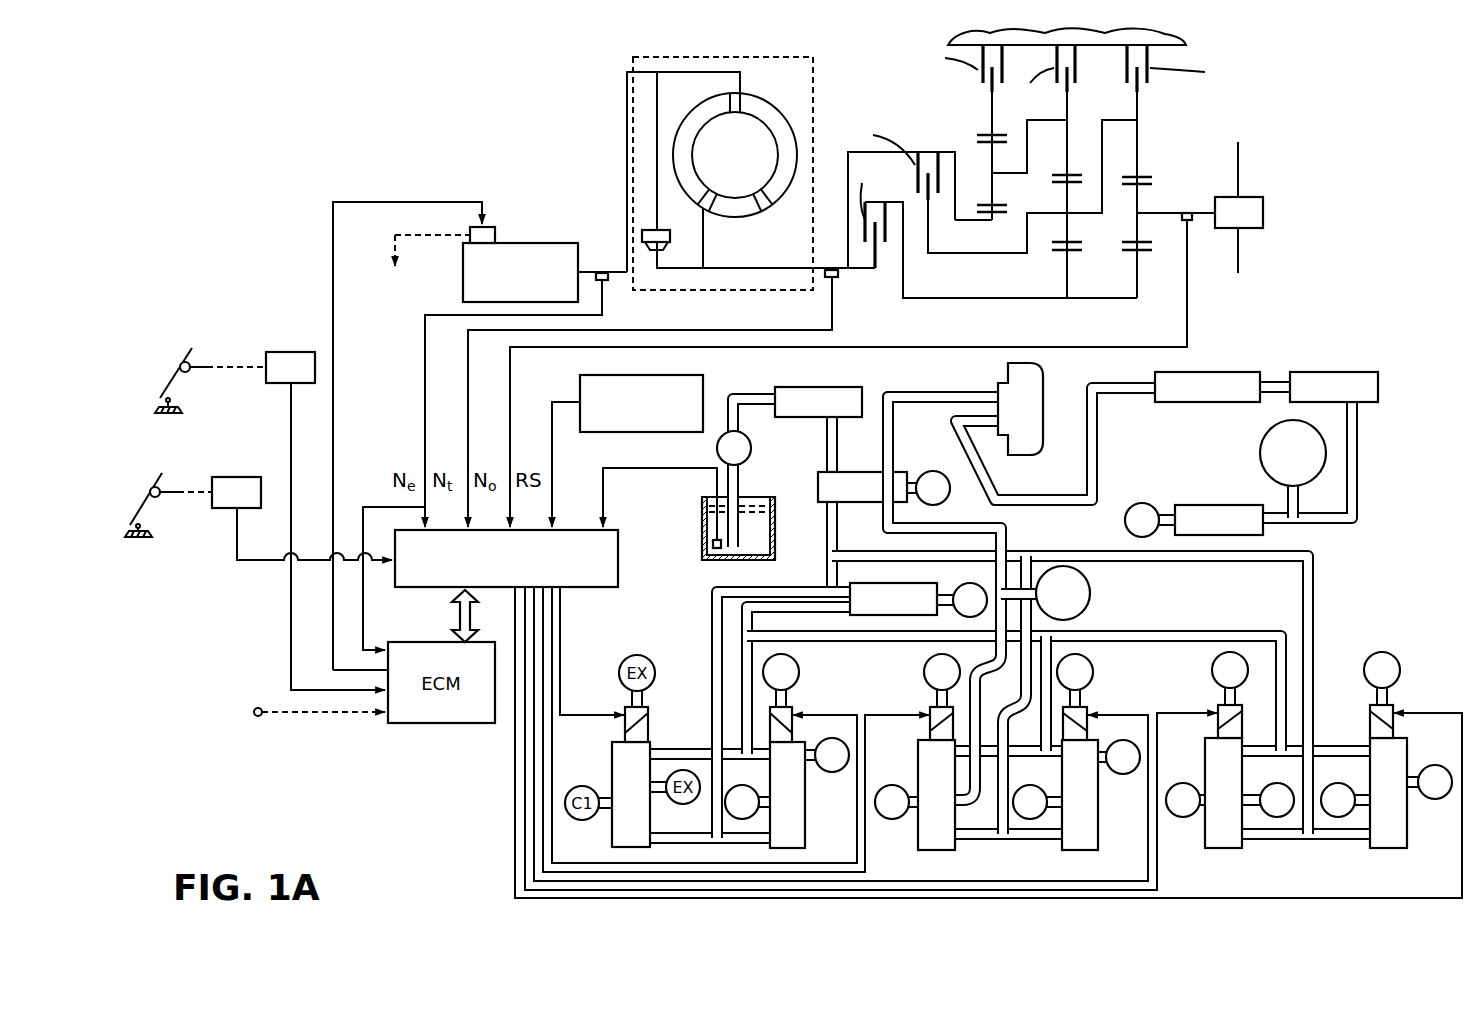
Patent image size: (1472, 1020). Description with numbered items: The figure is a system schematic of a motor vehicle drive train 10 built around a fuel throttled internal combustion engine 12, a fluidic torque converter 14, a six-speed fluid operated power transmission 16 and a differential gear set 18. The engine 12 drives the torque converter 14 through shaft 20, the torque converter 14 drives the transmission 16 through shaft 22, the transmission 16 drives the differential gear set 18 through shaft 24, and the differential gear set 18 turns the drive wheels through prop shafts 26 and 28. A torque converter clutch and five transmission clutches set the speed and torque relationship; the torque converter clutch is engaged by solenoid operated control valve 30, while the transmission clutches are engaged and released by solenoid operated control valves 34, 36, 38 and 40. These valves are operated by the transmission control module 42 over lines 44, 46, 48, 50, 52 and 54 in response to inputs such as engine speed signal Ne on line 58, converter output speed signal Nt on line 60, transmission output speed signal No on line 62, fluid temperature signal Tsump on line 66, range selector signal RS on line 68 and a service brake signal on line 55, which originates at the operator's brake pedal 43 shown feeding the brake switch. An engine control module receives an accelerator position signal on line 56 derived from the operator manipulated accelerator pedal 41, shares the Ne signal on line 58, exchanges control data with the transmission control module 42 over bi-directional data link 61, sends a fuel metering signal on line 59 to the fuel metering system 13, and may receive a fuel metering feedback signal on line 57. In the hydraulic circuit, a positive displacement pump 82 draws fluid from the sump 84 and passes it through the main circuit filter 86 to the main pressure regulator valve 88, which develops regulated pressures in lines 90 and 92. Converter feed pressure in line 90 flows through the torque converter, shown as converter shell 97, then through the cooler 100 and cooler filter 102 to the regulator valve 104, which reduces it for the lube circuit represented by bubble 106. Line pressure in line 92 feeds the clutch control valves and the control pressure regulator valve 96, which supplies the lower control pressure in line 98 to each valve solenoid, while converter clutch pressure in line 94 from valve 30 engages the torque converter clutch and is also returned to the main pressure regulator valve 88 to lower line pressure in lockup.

The motor vehicle drive train 10 is at (469, 162).
The fuel throttled internal combustion engine 12 is at (528, 245).
The fuel metering system 13 is at (492, 235).
The fluidic torque converter 14 is at (667, 52).
The six-speed fluid operated power transmission 16 is at (913, 128).
The differential gear set 18 is at (1263, 215).
The shaft 20 is at (627, 256).
The shaft 22 is at (843, 273).
The shaft 24 is at (1172, 210).
The prop shaft 26 is at (1240, 162).
The prop shaft 28 is at (1240, 247).
The solenoid operated control valve 30 is at (937, 843).
The solenoid operated control valve 34 is at (800, 797).
The solenoid operated control valve 36 is at (1077, 842).
The solenoid operated control valve 38 is at (1232, 846).
The solenoid operated control valve 40 is at (1380, 843).
The accelerator pedal 41 is at (178, 368).
The transmission control module 42 is at (572, 578).
The brake pedal 43 is at (150, 492).
The line 44 is at (540, 820).
The line 46 is at (585, 713).
The line 48 is at (550, 843).
The line 50 is at (533, 788).
The line 52 is at (523, 760).
The line 54 is at (515, 737).
The line 55 is at (237, 528).
The line 56 is at (291, 400).
The line 57 is at (393, 250).
The line 58 is at (425, 415).
The line 59 is at (333, 237).
The line 60 is at (467, 388).
The bi-directional data link 61 is at (456, 616).
The line 62 is at (507, 367).
The line 66 is at (637, 467).
The line 68 is at (550, 425).
The positive displacement pump 82 is at (716, 447).
The sump 84 is at (771, 497).
The main circuit filter 86 is at (777, 390).
The main pressure regulator valve 88 is at (820, 503).
The line 90 is at (922, 393).
The line 92 is at (711, 616).
The line 94 is at (1007, 526).
The control pressure regulator valve 96 is at (897, 615).
The converter shell 97 is at (1013, 378).
The line 98 is at (742, 690).
The cooler 100 is at (1250, 372).
The cooler filter 102 is at (1372, 372).
The regulator valve 104 is at (1212, 504).
The bubble 106 is at (1275, 436).